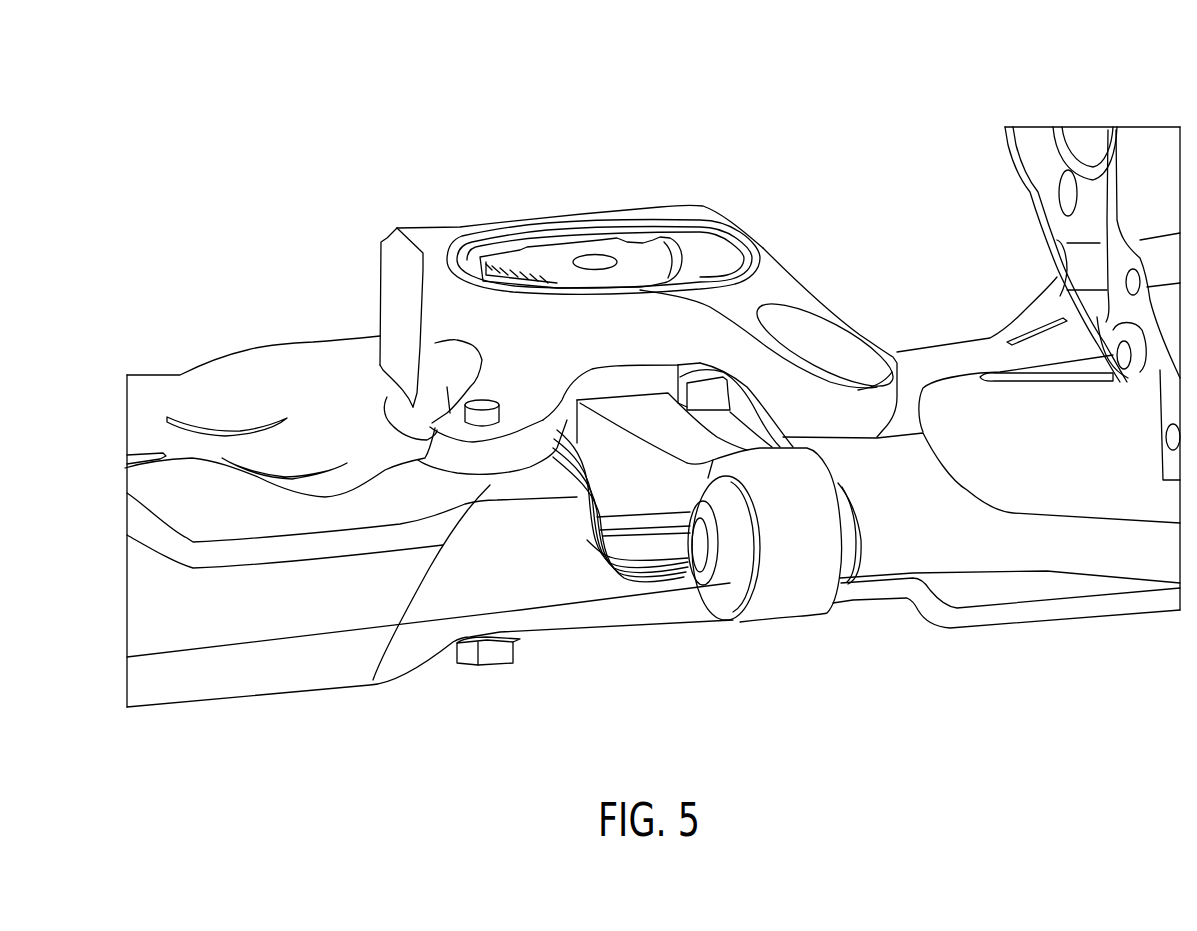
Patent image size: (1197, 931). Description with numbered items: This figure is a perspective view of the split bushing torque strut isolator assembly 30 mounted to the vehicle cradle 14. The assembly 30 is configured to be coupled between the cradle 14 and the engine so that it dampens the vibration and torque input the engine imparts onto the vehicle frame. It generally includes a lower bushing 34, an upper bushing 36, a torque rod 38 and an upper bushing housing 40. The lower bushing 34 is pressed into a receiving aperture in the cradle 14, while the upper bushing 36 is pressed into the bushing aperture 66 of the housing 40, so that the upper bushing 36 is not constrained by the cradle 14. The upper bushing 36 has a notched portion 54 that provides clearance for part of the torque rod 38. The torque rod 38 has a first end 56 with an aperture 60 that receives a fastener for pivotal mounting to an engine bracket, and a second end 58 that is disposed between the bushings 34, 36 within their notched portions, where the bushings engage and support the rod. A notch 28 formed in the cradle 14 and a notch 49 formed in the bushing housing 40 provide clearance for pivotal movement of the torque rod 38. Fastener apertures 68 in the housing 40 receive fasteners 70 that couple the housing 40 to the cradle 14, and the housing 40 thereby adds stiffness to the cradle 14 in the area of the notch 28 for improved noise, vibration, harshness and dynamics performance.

The cradle 14 is at (322, 677).
The notch 28 is at (648, 582).
The torque strut isolator assembly 30 is at (613, 127).
The lower bushing 34 is at (622, 510).
The upper bushing 36 is at (702, 256).
The torque rod 38 is at (658, 496).
The upper bushing housing 40 is at (785, 271).
The notch 49 is at (645, 358).
The notched portion 54 is at (565, 416).
The first end 56 is at (793, 597).
The second end 58 is at (588, 496).
The aperture 60 is at (699, 552).
The bushing aperture 66 is at (468, 243).
The fastener apertures 68 is at (373, 680).
The fasteners 70 is at (490, 667).